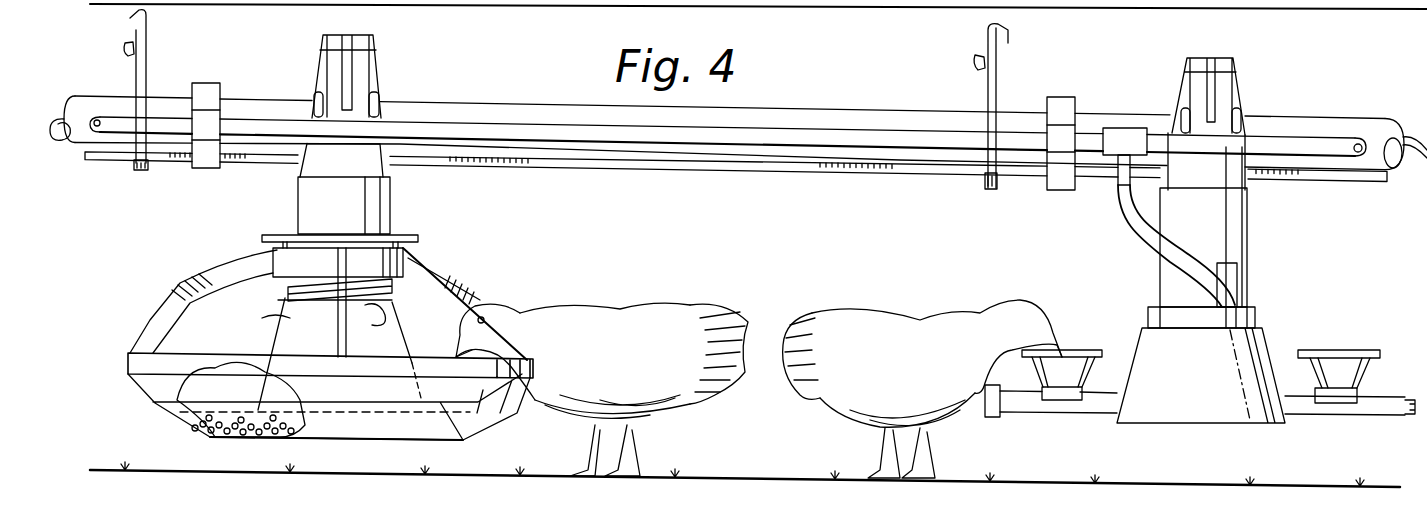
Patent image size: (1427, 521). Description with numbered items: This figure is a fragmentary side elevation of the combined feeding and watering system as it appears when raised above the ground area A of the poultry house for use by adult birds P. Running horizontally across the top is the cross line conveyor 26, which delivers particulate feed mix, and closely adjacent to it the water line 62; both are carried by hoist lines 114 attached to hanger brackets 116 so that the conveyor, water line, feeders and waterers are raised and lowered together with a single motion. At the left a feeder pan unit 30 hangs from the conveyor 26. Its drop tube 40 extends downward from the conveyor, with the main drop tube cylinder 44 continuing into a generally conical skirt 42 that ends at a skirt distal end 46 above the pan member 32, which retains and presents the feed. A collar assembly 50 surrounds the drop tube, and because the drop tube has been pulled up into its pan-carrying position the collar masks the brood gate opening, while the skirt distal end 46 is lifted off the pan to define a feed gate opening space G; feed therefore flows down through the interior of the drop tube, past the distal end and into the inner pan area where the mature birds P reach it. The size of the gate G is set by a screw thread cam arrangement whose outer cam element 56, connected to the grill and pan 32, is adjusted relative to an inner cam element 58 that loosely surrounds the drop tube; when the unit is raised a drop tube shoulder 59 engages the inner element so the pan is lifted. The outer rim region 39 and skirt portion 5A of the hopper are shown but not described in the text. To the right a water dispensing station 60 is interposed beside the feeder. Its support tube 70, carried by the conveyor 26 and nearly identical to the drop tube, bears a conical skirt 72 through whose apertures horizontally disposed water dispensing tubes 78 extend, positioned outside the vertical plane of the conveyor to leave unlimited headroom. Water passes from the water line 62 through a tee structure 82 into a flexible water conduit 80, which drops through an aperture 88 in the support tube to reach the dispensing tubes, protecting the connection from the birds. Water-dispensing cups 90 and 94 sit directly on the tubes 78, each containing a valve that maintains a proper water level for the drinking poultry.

The cross line conveyor 26 is at (553, 88).
The feeder pan unit 30 is at (313, 220).
The pan member 32 is at (173, 365).
The hopper cover rim 39 is at (150, 320).
The drop tube 40 is at (300, 200).
The skirt 42 is at (290, 317).
The drop tube cylinder 44 is at (365, 226).
The skirt distal end 46 is at (262, 410).
The collar assembly 50 is at (291, 262).
The outer cam element 56 is at (410, 253).
The cover skirt 5A is at (430, 252).
The inner cam element 58 is at (470, 297).
The drop tube shoulder 59 is at (426, 321).
The water dispensing station device 60 is at (1205, 258).
The water line 62 is at (802, 132).
The support tube 70 is at (1226, 228).
The skirt 72 is at (1146, 348).
The water dispensing tube 78 is at (1100, 408).
The water conduit 80 is at (1128, 187).
The tee structure 82 is at (1132, 130).
The aperture 88 is at (1232, 271).
The water-dispensing cup 90 is at (1365, 373).
The water-dispensing cup 94 is at (1095, 340).
The hoist line 114 is at (151, 24).
The hanger bracket 116 is at (149, 53).
The feed gate opening space G is at (253, 418).
The ground area A is at (735, 447).
The adult birds P is at (636, 377).